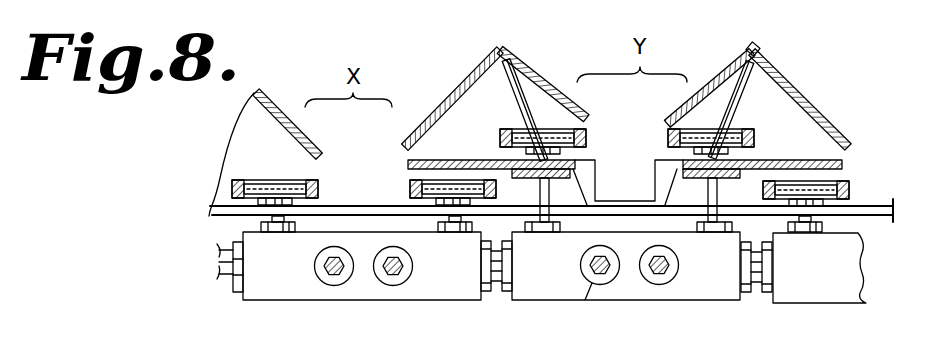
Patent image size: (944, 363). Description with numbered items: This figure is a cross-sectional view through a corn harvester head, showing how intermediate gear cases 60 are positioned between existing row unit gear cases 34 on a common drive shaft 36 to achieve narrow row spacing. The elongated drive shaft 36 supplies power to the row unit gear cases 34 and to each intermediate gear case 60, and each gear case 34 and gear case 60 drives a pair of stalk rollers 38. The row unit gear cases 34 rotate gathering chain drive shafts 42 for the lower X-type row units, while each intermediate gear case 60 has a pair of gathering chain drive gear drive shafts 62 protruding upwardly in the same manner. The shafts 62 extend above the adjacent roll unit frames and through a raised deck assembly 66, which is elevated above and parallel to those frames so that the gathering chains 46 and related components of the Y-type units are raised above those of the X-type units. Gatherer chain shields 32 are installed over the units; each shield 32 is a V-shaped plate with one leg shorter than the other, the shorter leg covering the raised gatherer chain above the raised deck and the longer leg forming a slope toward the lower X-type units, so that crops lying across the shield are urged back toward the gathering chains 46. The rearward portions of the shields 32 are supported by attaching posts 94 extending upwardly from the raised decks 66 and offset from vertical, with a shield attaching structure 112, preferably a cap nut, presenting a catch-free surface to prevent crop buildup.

The gatherer chain shield 32 is at (441, 109).
The row unit gear case 34 is at (395, 293).
The drive shaft 36 is at (760, 273).
The stalk roller 38 is at (318, 278).
The shaft 42 is at (443, 219).
The gathering chain 46 is at (842, 190).
The intermediate gear case 60 is at (653, 290).
The gathering chain drive gear drive shaft 62 is at (676, 182).
The raised deck assembly 66 is at (842, 164).
The attaching post 94 is at (519, 106).
The shield attaching structure 112 is at (758, 47).